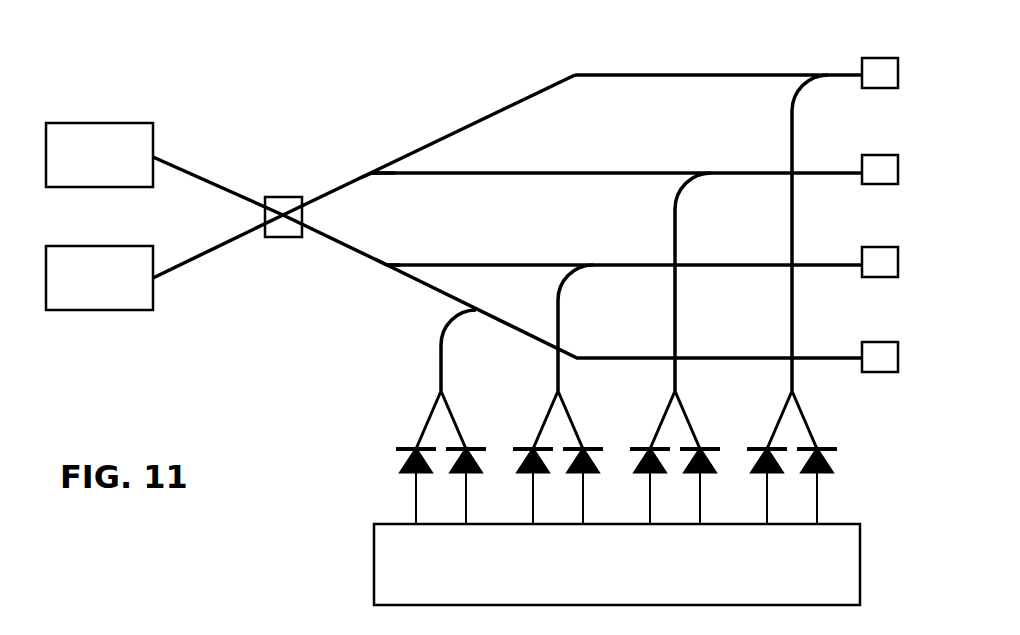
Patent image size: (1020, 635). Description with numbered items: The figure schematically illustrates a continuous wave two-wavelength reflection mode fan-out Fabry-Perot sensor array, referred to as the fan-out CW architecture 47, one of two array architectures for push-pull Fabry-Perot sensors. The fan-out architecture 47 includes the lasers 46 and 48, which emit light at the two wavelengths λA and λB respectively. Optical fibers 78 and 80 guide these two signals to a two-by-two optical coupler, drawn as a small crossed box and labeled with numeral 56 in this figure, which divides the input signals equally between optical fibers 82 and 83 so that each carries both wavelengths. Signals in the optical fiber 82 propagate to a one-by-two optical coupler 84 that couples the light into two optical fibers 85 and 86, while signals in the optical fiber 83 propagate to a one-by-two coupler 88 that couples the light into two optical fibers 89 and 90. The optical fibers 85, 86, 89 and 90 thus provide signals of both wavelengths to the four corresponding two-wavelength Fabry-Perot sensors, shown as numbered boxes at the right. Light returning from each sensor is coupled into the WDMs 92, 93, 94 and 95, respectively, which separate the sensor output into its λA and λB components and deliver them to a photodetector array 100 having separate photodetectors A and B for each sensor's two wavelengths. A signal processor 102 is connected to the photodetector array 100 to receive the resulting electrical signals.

The laser 46 is at (112, 123).
The laser 48 is at (83, 310).
The optical coupler 56 is at (278, 238).
The optical fiber 78 is at (198, 177).
The optical fiber 80 is at (178, 267).
The optical fiber 82 is at (333, 190).
The optical fiber 83 is at (323, 238).
The 1×2 optical coupler 84 is at (378, 150).
The optical fiber 85 is at (687, 75).
The optical fiber 86 is at (617, 173).
The 1×2 coupler 88 is at (371, 285).
The optical fiber 89 is at (520, 265).
The optical fiber 90 is at (423, 285).
The WDM 92 is at (829, 94).
The WDM 93 is at (716, 194).
The WDM 94 is at (604, 285).
The WDM 95 is at (484, 332).
The photodetector array 100 is at (345, 450).
The signal processor 102 is at (374, 570).
The fan-out continuous wave (CW) architecture 47 is at (245, 556).